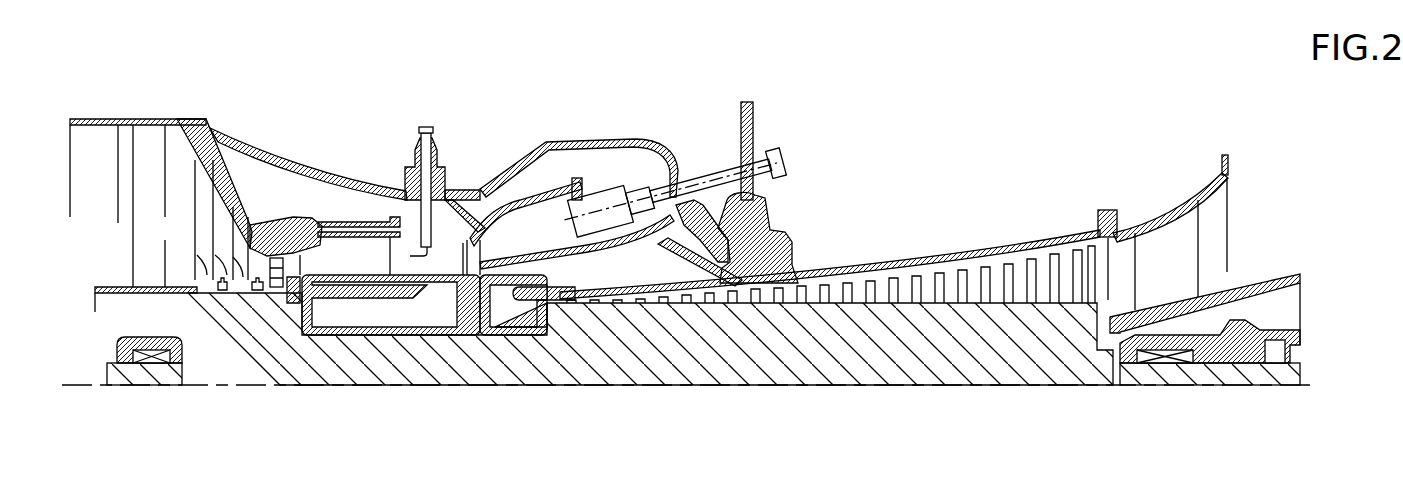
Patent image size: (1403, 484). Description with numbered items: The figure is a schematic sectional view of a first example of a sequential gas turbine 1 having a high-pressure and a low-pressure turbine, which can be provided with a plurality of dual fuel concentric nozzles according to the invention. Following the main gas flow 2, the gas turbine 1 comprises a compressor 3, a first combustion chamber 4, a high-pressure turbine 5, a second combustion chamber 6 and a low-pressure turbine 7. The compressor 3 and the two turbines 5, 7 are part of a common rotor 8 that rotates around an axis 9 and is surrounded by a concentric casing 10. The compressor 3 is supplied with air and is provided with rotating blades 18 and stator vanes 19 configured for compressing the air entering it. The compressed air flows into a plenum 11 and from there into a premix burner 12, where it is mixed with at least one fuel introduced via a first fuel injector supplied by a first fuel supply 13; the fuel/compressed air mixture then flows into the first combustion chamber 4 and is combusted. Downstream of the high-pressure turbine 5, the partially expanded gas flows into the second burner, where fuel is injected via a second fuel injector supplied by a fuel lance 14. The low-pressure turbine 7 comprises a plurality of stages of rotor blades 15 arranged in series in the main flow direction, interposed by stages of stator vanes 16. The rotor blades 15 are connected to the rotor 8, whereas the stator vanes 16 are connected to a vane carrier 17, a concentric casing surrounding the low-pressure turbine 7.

The sequential gas turbine 1 is at (1212, 88).
The main gas flow 2 is at (117, 255).
The compressor 3 is at (960, 250).
The first combustion chamber 4 is at (547, 242).
The high-pressure turbine 5 is at (463, 250).
The second combustion chamber 6 is at (356, 268).
The low-pressure turbine 7 is at (232, 156).
The common rotor 8 is at (810, 376).
The axis 9 is at (1300, 387).
The concentric casing 10 is at (560, 142).
The plenum 11 is at (655, 220).
The premix burner 12 is at (598, 208).
The first fuel supply 13 is at (781, 169).
The fuel lance 14 is at (427, 126).
The rotor blades 15 is at (238, 258).
The stator vanes 16 is at (228, 172).
The vane carrier 17 is at (240, 207).
The rotating blades 18 is at (1040, 293).
The stator vanes 19 is at (1085, 250).